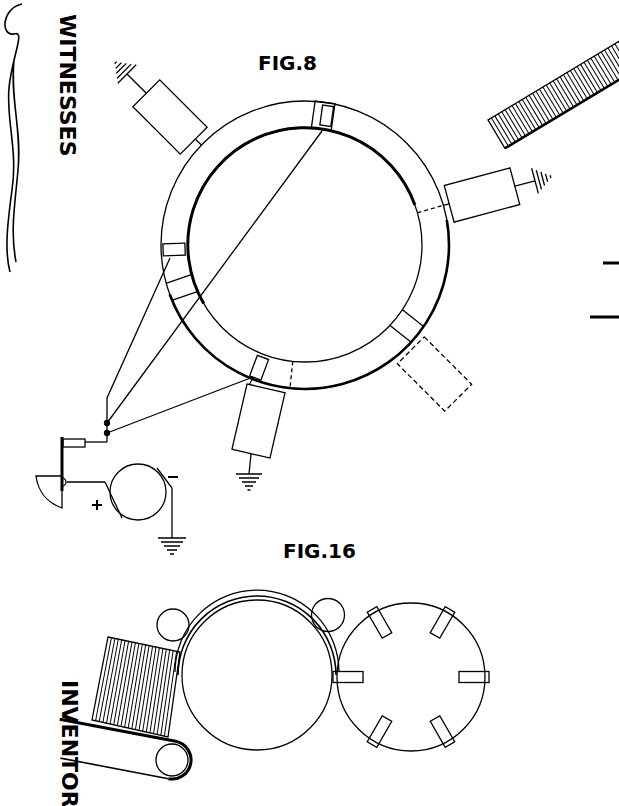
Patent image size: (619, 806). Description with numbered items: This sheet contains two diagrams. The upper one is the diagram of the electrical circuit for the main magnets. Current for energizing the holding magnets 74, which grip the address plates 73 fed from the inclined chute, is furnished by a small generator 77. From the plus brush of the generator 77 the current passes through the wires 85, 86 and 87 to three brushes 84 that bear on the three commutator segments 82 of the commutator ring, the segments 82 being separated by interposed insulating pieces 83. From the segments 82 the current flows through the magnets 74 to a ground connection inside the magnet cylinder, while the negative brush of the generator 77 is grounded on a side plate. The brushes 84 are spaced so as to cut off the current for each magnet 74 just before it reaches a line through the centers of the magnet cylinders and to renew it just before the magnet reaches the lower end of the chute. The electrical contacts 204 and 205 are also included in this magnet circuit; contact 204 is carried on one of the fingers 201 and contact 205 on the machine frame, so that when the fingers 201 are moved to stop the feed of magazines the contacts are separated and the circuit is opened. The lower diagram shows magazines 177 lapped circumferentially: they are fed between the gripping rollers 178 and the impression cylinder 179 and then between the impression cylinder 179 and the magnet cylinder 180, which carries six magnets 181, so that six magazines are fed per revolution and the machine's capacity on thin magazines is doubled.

In FIG. 8, the address plate 73 is at (553, 90).
In FIG. 8, the holding magnet 74 is at (329, 271).
In FIG. 8, the generator 77 is at (139, 509).
In FIG. 8, the commutator segment 82 is at (248, 120).
In FIG. 8, the insulating piece 83 is at (317, 108).
In FIG. 8, the brush 84 is at (336, 120).
In FIG. 8, the wire 85 is at (130, 346).
In FIG. 8, the wire 86 is at (160, 355).
In FIG. 8, the wire 87 is at (187, 405).
In FIG. 8, the finger 201 is at (36, 486).
In FIG. 8, the electrical contact 204 is at (60, 460).
In FIG. 8, the electrical contact 205 is at (73, 439).
In FIG. 16, the magazine 177 is at (125, 702).
In FIG. 16, the gripping roller 178 is at (197, 598).
In FIG. 16, the impression cylinder 179 is at (257, 670).
In FIG. 16, the magnet cylinder 180 is at (411, 677).
In FIG. 16, the magnet 181 is at (437, 618).